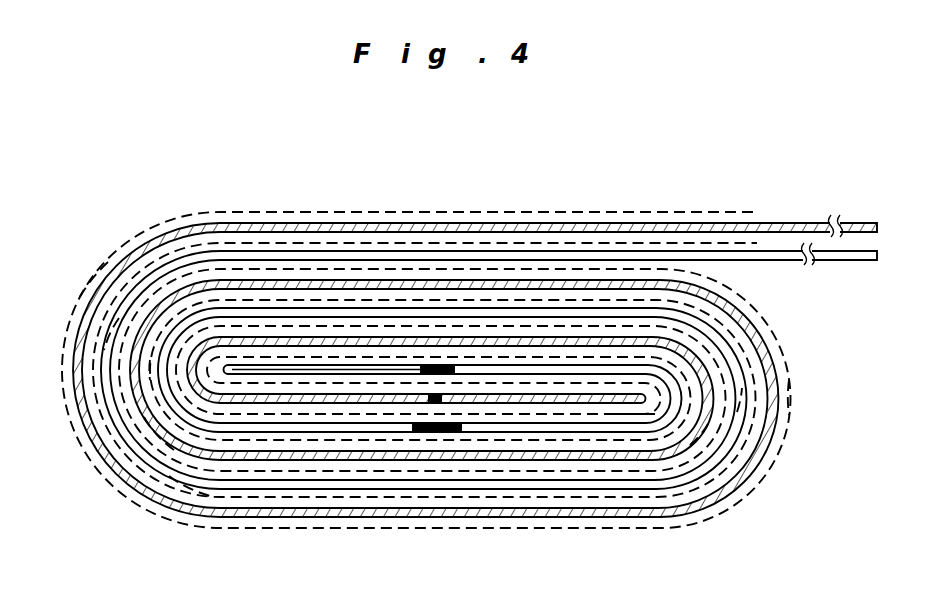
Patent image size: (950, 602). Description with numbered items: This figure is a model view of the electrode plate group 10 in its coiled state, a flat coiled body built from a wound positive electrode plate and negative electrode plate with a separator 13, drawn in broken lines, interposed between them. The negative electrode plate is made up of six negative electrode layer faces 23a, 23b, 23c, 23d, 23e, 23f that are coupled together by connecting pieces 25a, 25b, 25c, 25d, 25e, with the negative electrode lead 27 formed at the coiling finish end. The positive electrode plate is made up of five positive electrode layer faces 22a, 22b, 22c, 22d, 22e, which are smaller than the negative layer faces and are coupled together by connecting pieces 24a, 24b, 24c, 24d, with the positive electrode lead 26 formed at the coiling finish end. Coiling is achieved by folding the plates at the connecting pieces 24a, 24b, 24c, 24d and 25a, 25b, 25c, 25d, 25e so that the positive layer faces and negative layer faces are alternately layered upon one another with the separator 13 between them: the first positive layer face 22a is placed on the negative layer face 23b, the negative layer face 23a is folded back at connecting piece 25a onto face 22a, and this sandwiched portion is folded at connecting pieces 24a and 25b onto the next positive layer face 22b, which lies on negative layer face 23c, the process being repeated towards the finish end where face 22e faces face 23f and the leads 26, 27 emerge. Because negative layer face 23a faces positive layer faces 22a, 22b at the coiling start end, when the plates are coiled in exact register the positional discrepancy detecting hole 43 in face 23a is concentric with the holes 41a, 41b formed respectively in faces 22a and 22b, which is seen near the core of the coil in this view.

The electrode plate group 10 is at (177, 188).
The separator 13 is at (752, 317).
The first positive electrode layer face 22a is at (290, 370).
The positive electrode layer face 22b is at (569, 433).
The positive electrode layer face 22c is at (387, 310).
The positive electrode layer face 22d is at (376, 490).
The positive electrode layer face 22e is at (500, 253).
The negative electrode layer face 23a is at (604, 404).
The negative electrode layer face 23b is at (333, 340).
The negative electrode layer face 23c is at (483, 458).
The negative electrode layer face 23d is at (455, 282).
The negative electrode layer face 23e is at (256, 522).
The negative electrode layer face 23f is at (537, 225).
The connecting piece 24a is at (660, 414).
The connecting piece 24b is at (168, 432).
The connecting piece 24c is at (741, 406).
The connecting piece 24d is at (112, 337).
The connecting piece 25a is at (197, 462).
The connecting piece 25b is at (707, 423).
The connecting piece 25c is at (158, 372).
The connecting piece 25d is at (771, 388).
The connecting piece 25e is at (103, 278).
The positive electrode lead 26 is at (848, 258).
The negative electrode lead 27 is at (850, 222).
The hole 41a is at (433, 375).
The hole 41b is at (434, 434).
The positional discrepancy detecting hole 43 is at (442, 405).